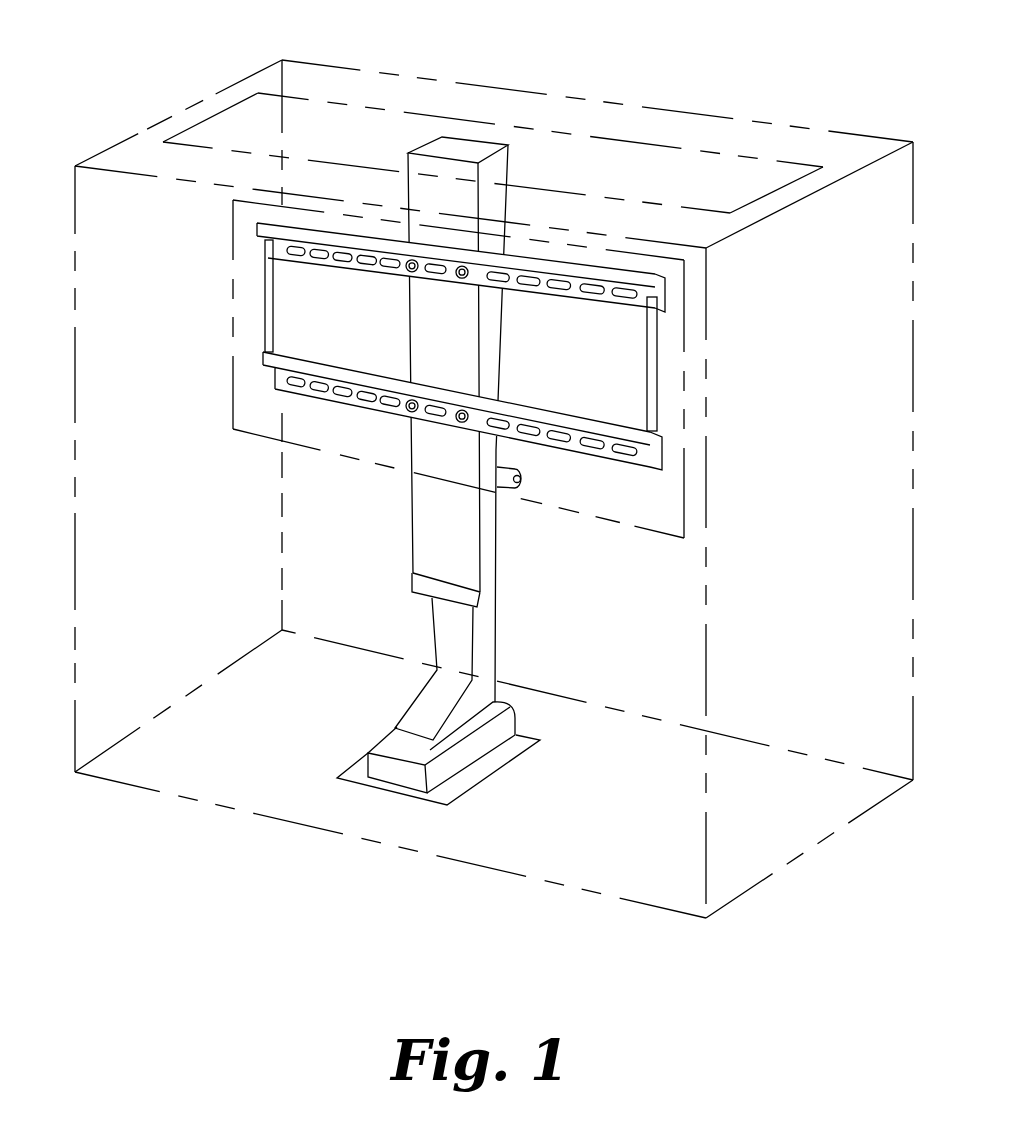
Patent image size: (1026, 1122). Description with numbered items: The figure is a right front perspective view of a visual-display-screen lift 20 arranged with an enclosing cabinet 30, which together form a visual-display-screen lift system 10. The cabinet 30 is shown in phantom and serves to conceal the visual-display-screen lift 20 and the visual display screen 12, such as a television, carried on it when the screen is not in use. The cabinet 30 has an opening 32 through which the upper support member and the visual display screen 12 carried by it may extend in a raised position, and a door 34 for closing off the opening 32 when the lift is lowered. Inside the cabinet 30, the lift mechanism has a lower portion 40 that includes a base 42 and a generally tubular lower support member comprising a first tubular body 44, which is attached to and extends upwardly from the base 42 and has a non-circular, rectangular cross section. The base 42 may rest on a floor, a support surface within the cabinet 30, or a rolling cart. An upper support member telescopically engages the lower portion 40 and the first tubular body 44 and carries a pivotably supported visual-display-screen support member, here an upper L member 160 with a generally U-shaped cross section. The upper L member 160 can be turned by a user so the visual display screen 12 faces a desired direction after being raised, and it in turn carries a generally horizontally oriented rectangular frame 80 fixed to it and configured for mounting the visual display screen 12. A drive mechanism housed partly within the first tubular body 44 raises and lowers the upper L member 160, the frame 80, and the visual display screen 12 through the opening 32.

The visual-display-screen lift system 10 is at (140, 93).
The visual display screen 12 is at (684, 415).
The visual-display-screen lift 20 is at (407, 508).
The cabinet 30 is at (130, 507).
The opening 32 is at (607, 137).
The door 34 is at (698, 175).
The lower portion 40 is at (530, 658).
The base 42 is at (490, 738).
The first tubular body 44 is at (483, 624).
The rectangular frame 80 is at (264, 361).
The upper L member 160 is at (493, 205).